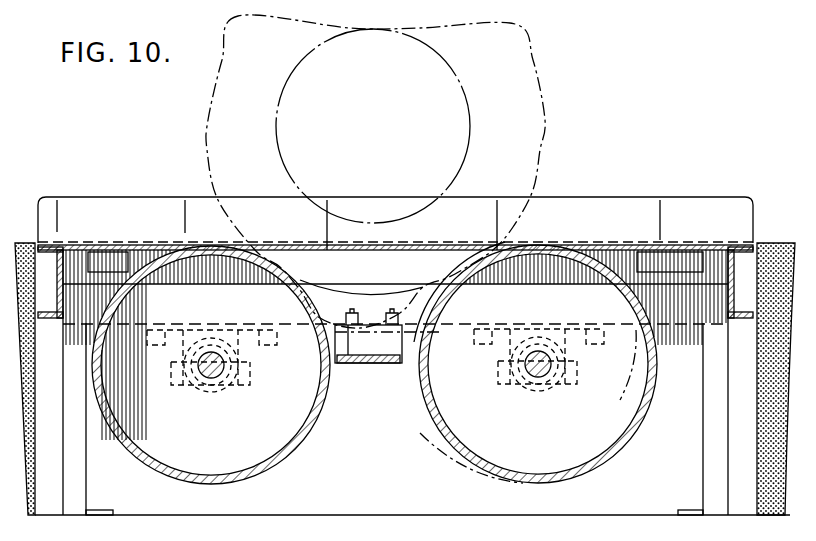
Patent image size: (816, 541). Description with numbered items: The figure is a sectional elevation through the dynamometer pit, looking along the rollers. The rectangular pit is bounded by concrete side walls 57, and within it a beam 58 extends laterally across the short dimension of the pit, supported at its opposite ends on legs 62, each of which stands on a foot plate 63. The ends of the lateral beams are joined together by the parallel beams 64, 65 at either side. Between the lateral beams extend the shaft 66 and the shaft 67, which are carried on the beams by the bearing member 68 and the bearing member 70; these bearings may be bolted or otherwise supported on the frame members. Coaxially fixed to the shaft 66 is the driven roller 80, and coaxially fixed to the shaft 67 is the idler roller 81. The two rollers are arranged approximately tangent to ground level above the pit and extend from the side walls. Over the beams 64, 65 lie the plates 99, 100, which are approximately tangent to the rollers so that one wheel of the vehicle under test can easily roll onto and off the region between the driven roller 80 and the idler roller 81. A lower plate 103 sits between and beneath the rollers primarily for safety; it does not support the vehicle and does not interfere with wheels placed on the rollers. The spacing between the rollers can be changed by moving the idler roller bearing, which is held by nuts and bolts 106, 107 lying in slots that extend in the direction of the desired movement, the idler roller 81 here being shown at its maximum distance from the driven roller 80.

The concrete side walls 57 is at (35, 443).
The beam 58 is at (675, 316).
The legs 62 is at (86, 484).
The foot plate 63 is at (107, 510).
The beam 64 is at (57, 318).
The beam 65 is at (745, 318).
The shaft 66 is at (204, 374).
The shaft 67 is at (530, 372).
The bearing member 68 is at (228, 385).
The bearing member 70 is at (556, 385).
The driven roller 80 is at (315, 418).
The idler roller 81 is at (602, 466).
The plate 99 is at (90, 247).
The plate 100 is at (677, 247).
The lower plate 103 is at (383, 365).
The nuts and bolts 106 is at (490, 350).
The nuts and bolts 107 is at (588, 348).